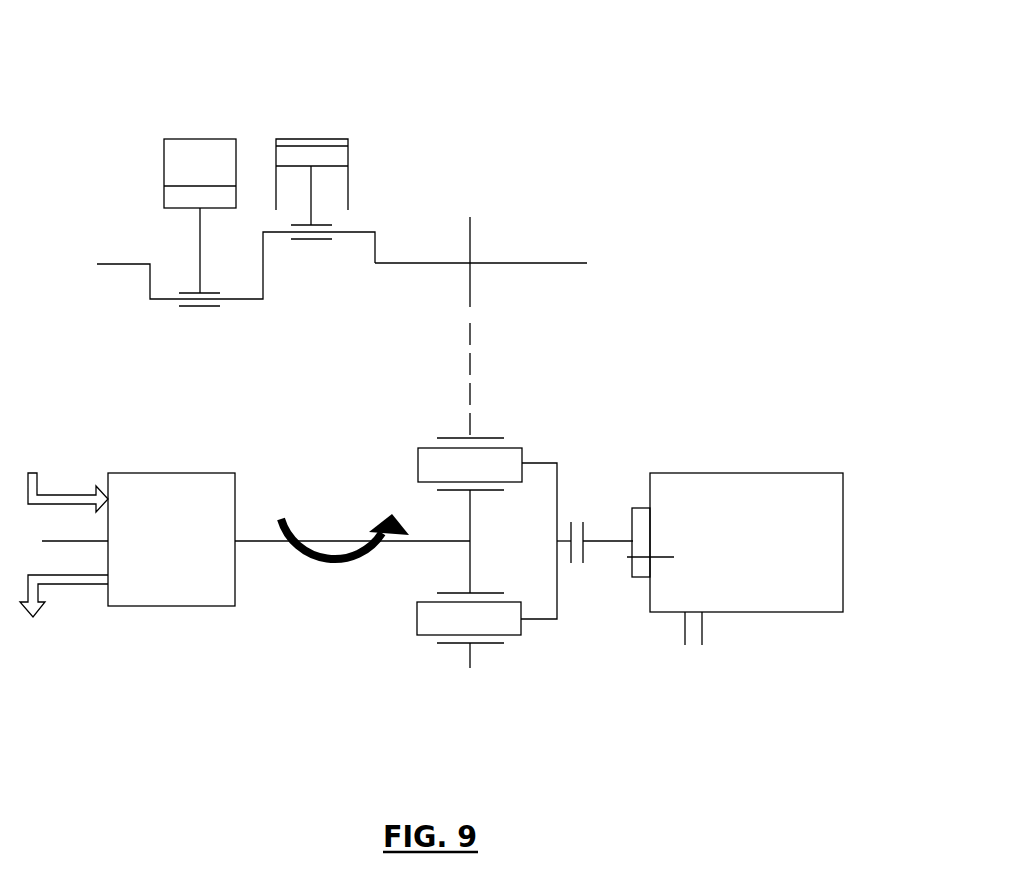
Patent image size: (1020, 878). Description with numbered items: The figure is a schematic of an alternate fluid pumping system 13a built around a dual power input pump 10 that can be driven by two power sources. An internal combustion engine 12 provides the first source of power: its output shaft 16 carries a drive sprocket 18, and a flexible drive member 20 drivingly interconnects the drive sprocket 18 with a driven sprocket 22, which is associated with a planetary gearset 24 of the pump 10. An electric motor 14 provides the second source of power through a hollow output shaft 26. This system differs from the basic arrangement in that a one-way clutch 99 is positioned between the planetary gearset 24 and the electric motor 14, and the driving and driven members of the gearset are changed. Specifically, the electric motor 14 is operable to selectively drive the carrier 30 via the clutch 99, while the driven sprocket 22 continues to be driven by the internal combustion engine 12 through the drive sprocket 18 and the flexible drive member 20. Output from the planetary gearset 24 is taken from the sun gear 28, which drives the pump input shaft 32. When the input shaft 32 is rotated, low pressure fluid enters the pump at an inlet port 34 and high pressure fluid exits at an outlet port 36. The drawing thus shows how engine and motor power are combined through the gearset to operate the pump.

The dual power input pump 10 is at (652, 381).
The internal combustion engine 12 is at (321, 116).
The fluid pumping system 13a is at (660, 71).
The electric motor 14 is at (775, 487).
The output shaft 16 is at (405, 262).
The drive sprocket 18 is at (471, 232).
The flexible drive member 20 is at (471, 333).
The driven sprocket 22 is at (472, 660).
The planetary gearset 24 is at (403, 644).
The hollow output shaft 26 is at (604, 541).
The sun gear 28 is at (450, 593).
The carrier 30 is at (558, 583).
The pump input shaft 32 is at (265, 543).
The inlet port 34 is at (95, 492).
The outlet port 36 is at (98, 587).
The one-way clutch 99 is at (573, 528).